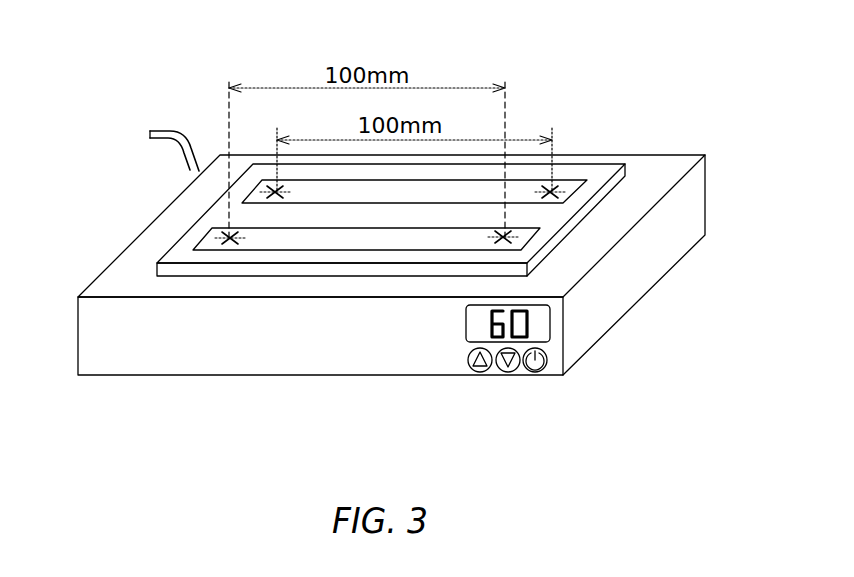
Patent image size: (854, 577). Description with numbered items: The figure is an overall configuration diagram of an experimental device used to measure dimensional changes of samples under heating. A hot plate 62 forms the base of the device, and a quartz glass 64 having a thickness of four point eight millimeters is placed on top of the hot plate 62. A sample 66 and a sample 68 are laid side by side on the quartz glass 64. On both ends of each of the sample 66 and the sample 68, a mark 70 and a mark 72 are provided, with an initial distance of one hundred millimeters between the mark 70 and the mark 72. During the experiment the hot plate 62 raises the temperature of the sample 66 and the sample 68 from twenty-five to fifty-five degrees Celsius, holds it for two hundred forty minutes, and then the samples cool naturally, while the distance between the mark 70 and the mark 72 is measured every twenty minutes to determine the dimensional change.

The hot plate 62 is at (135, 352).
The quartz glass 64 is at (605, 170).
The sample 66 is at (292, 240).
The sample 68 is at (402, 192).
The mark 70 is at (506, 235).
The mark 72 is at (268, 191).